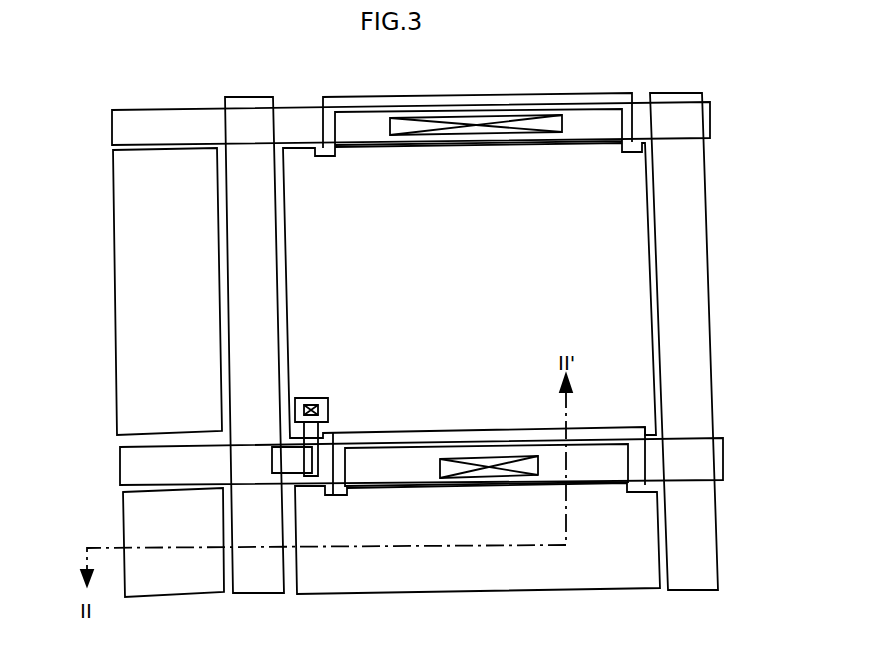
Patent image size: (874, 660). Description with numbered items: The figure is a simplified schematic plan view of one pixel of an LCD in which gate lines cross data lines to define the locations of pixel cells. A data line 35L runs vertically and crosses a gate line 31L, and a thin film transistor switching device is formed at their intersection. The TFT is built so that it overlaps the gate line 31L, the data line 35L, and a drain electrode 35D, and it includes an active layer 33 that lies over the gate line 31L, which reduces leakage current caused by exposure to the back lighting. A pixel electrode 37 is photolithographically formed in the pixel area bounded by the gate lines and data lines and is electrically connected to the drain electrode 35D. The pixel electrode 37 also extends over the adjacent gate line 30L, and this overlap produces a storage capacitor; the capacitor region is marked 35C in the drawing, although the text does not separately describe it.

The adjacent gate line 30L is at (710, 120).
The gate line 31L is at (127, 455).
The data line 35L is at (277, 210).
The pixel electrode 37 is at (140, 312).
The storage capacitor electrode 35C is at (381, 147).
The drain electrode 35D is at (330, 392).
The active layer 33 is at (293, 476).